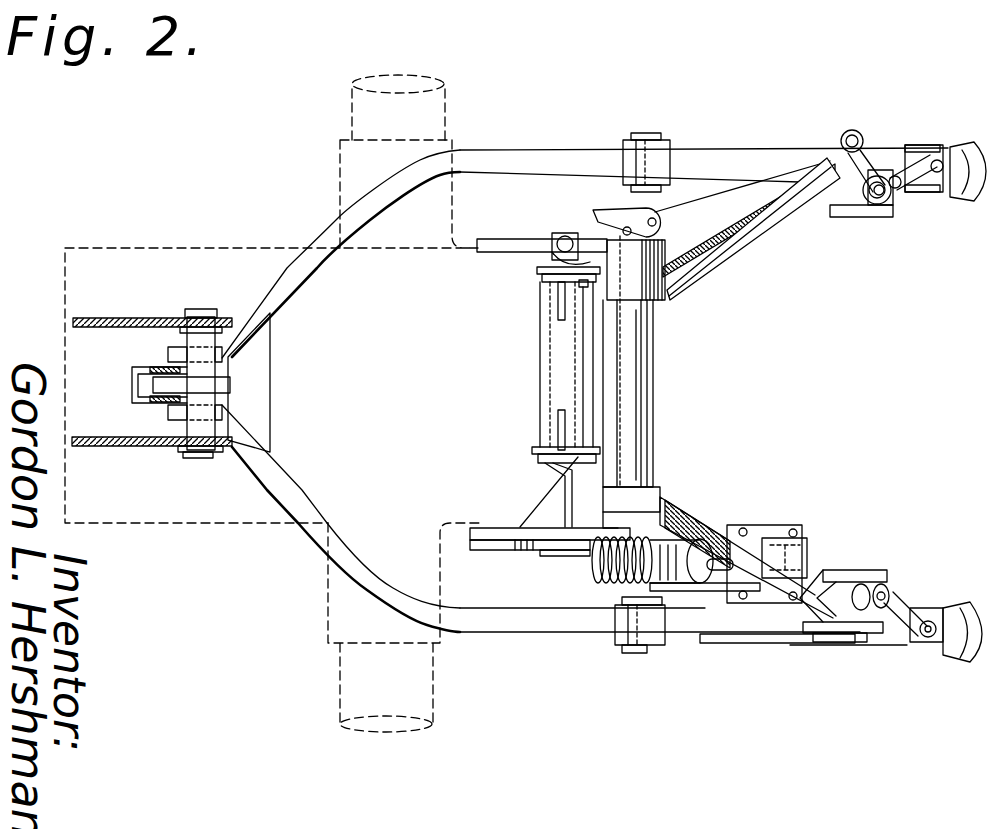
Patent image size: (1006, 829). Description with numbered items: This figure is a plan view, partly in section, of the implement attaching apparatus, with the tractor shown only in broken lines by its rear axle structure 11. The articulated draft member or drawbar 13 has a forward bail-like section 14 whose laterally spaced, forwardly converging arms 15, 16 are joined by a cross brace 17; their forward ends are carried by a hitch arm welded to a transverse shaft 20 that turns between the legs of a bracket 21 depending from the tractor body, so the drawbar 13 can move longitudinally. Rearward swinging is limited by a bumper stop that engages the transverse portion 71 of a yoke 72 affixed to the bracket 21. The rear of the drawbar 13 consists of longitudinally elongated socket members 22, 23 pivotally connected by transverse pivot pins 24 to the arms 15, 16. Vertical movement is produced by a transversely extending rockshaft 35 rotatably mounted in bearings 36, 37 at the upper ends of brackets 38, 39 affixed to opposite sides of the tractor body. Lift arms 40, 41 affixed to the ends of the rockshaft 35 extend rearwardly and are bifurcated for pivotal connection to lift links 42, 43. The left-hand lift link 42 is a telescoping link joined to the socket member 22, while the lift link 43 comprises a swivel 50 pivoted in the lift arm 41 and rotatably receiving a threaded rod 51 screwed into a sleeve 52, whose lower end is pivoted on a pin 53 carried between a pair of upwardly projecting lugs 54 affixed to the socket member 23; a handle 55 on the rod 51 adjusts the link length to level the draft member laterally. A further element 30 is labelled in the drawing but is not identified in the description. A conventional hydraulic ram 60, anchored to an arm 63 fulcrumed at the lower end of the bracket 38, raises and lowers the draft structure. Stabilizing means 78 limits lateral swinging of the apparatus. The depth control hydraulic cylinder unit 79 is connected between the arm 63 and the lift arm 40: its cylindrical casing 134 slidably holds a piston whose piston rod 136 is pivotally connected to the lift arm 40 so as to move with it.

The rear axle structure 11 is at (352, 118).
The drawbar 13 is at (770, 660).
The bail-like section 14 is at (251, 297).
The arm 15 is at (296, 486).
The arm 16 is at (308, 281).
The cross brace 17 is at (258, 357).
The transverse shaft 20 is at (208, 283).
The bracket 21 is at (138, 288).
The socket member 22 is at (700, 627).
The socket member 23 is at (687, 152).
The pivot pin 24 is at (645, 134).
The lever plates 30 is at (810, 166).
The rockshaft 35 is at (645, 368).
The bearing 36 is at (638, 517).
The bearing 37 is at (646, 266).
The bracket 38 is at (482, 528).
The bracket 39 is at (487, 248).
The lift arm 40 is at (684, 507).
The lift arm 41 is at (760, 232).
The lift link 42 is at (908, 585).
The lift link 43 is at (904, 210).
The swivel 50 is at (888, 212).
The rod 51 is at (877, 176).
The sleeve 52 is at (905, 184).
The pin 53 is at (918, 150).
The lug 54 is at (945, 150).
The handle 55 is at (847, 129).
The hydraulic ram 60 is at (785, 513).
The arm 63 is at (563, 548).
The transverse portion 71 is at (130, 384).
The yoke 72 is at (122, 393).
The stabilizing means 78 is at (600, 208).
The hydraulic cylinder unit 79 is at (595, 583).
The cylindrical casing 134 is at (680, 550).
The piston rod 136 is at (717, 570).